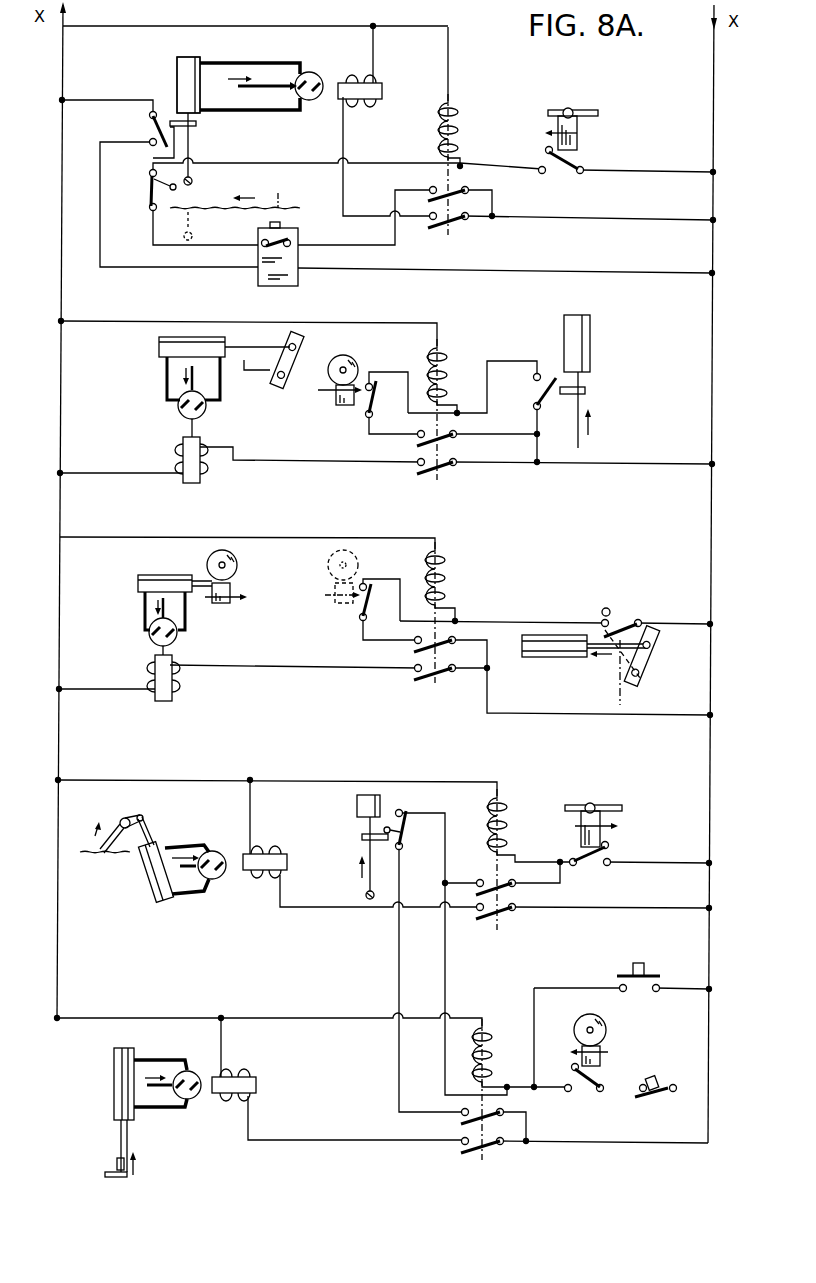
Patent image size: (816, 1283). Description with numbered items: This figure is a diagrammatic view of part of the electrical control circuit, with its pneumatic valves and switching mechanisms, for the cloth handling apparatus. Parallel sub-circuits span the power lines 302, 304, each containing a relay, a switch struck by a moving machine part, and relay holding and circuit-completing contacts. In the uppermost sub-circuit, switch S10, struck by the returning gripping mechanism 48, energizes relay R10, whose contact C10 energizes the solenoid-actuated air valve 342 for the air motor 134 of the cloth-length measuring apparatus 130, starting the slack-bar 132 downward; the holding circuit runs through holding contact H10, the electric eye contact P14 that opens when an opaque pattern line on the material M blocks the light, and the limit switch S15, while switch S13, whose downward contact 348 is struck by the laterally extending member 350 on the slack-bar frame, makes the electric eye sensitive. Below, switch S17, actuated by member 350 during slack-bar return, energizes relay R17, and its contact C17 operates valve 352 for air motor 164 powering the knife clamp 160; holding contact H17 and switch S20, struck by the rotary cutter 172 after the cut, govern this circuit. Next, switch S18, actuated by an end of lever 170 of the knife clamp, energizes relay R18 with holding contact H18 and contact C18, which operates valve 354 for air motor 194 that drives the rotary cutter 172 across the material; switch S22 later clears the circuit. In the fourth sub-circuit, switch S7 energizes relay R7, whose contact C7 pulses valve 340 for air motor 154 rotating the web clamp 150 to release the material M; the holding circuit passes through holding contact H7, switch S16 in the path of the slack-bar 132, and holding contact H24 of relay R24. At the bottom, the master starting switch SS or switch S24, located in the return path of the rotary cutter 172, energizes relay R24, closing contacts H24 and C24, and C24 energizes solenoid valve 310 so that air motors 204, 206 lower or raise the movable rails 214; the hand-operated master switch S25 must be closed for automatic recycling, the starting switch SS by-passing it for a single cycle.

The power line 302 is at (58, 375).
The power line 304 is at (715, 318).
The air motor 134 is at (177, 65).
The cloth-length measuring apparatus 130 is at (161, 91).
The laterally extending member 350 is at (197, 122).
The slack-bar 132 is at (193, 181).
The solenoid-actuated air valve 342 is at (338, 84).
The switch contact 348 is at (176, 147).
The switch S13 is at (150, 116).
The switch S15 is at (150, 175).
The electric eye contact P14 is at (262, 242).
The material M is at (290, 208).
The relay R10 is at (440, 132).
The relay holding contact H10 is at (436, 187).
The relay contact C10 is at (462, 228).
The gripping mechanism 48 is at (590, 118).
The switch S10 is at (576, 175).
The air motor 164 is at (159, 344).
The lever 170 is at (300, 341).
The knife clamp 160 is at (265, 368).
The rotary cutter 172 is at (350, 360).
The solenoid-operated valve 352 is at (188, 424).
The relay R17 is at (447, 355).
The switch S20 is at (365, 416).
The relay holding contact H17 is at (415, 445).
The relay contact C17 is at (444, 475).
The switch S17 is at (536, 392).
The air motor 194 is at (149, 577).
The solenoid-actuated air valve 354 is at (155, 658).
The switch S22 is at (360, 620).
The relay R18 is at (447, 560).
The relay holding contact H18 is at (412, 650).
The relay contact C18 is at (442, 682).
The switch S18 is at (624, 620).
The web clamp 150 is at (122, 818).
The air motor 154 is at (152, 880).
The solenoid-actuated air valve 340 is at (242, 877).
The switch S16 is at (400, 848).
The relay R7 is at (507, 803).
The relay holding contact H7 is at (518, 880).
The relay contact C7 is at (506, 920).
The switch S7 is at (612, 848).
The master starting switch SS is at (622, 970).
The air motor 204 is at (114, 1080).
The air motor 206 is at (114, 1092).
The solenoid valve 310 is at (212, 1077).
The movable rails 214 is at (118, 1163).
The relay R24 is at (487, 1034).
The relay holding contact H24 is at (458, 1124).
The relay contact C24 is at (493, 1150).
The switch S24 is at (588, 1095).
The hand-operated master switch S25 is at (660, 1097).